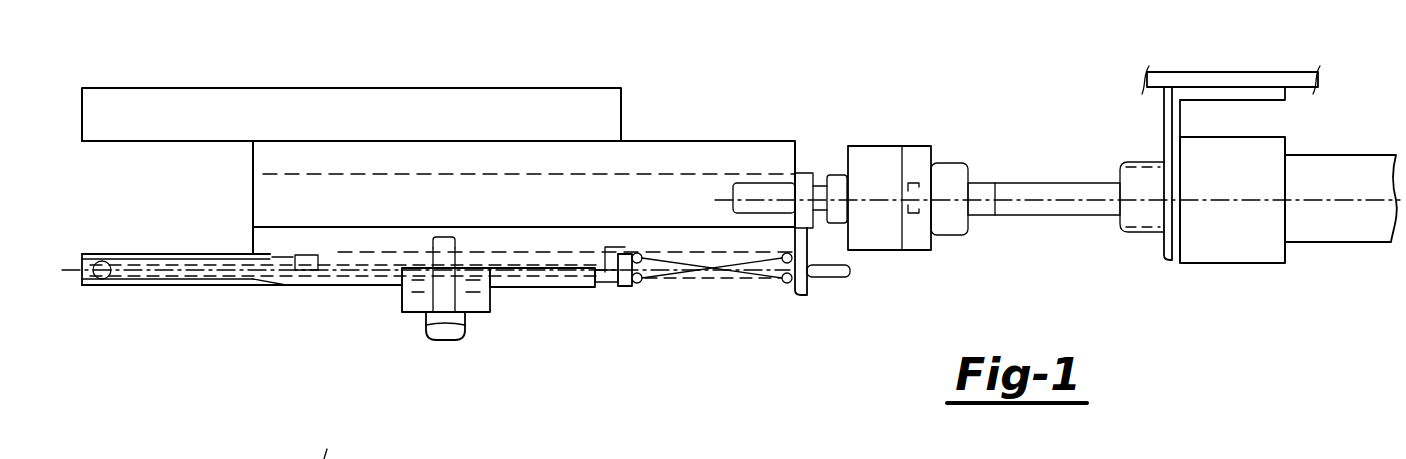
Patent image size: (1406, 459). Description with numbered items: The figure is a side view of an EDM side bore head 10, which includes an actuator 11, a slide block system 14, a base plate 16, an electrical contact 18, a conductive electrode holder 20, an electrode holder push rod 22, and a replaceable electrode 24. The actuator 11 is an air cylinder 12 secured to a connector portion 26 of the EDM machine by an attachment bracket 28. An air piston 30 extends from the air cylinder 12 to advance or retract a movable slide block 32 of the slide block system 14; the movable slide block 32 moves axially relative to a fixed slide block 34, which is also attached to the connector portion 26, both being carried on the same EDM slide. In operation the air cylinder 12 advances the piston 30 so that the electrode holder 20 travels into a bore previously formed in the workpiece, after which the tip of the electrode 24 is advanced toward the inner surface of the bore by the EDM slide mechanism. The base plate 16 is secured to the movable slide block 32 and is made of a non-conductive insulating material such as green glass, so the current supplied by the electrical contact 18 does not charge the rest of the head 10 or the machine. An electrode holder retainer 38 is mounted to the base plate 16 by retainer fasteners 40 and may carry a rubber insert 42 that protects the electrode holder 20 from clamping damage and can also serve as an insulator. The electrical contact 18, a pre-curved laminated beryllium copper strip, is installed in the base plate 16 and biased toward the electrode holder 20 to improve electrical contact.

The EDM side bore head 10 is at (605, 308).
The actuator 11 is at (1142, 222).
The air cylinder 12 is at (1337, 228).
The slide block system 14 is at (316, 107).
The base plate 16 is at (565, 245).
The electrical contact 18 is at (308, 256).
The conductive electrode holder 20 is at (300, 283).
The electrode holder push rod 22 is at (210, 285).
The replaceable electrode 24 is at (100, 279).
The connector portion 26 is at (1157, 82).
The attachment bracket 28 is at (1207, 96).
The air piston 30 is at (1048, 210).
The movable slide block 32 is at (677, 183).
The fixed slide block 34 is at (441, 105).
The electrode holder retainer 38 is at (412, 303).
The retainer fasteners 40 is at (437, 325).
The rubber insert 42 is at (402, 290).